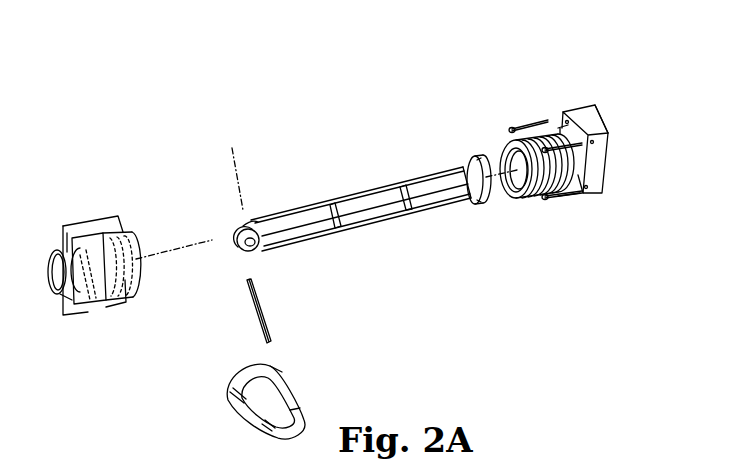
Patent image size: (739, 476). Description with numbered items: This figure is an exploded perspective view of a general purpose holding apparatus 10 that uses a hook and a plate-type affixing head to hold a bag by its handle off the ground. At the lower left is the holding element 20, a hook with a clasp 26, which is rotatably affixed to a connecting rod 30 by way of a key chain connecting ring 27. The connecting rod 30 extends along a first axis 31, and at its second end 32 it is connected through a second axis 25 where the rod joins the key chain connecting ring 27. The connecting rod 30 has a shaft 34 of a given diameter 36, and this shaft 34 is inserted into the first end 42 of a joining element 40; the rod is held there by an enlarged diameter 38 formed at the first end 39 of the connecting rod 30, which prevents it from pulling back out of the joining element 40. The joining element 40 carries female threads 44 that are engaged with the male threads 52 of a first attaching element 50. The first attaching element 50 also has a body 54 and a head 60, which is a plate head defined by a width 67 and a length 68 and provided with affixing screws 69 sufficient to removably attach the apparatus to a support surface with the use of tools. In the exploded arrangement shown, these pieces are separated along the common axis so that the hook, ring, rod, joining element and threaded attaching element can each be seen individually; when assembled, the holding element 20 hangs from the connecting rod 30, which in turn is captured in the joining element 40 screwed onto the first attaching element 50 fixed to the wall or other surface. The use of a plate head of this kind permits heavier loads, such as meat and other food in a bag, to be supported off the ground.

The general purpose holding apparatus 10 is at (440, 69).
The holding element 20 is at (257, 401).
The second axis 25 is at (240, 180).
The clasp 26 is at (225, 392).
The key chain connecting ring 27 is at (248, 309).
The connecting rod 30 is at (346, 206).
The first axis 31 is at (193, 244).
The second end 32 is at (240, 247).
The shaft 34 is at (383, 196).
The diameter 36 is at (402, 242).
The enlarged diameter 38 is at (466, 160).
The first end 39 is at (483, 190).
The joining element 40 is at (98, 291).
The first end 42 is at (70, 278).
The female threads 44 is at (118, 244).
The first attaching element 50 is at (578, 152).
The male threads 52 is at (508, 152).
The body 54 is at (571, 193).
The head 60 is at (615, 164).
The width 67 is at (611, 147).
The length 68 is at (598, 108).
The affixing screws 69 is at (541, 121).